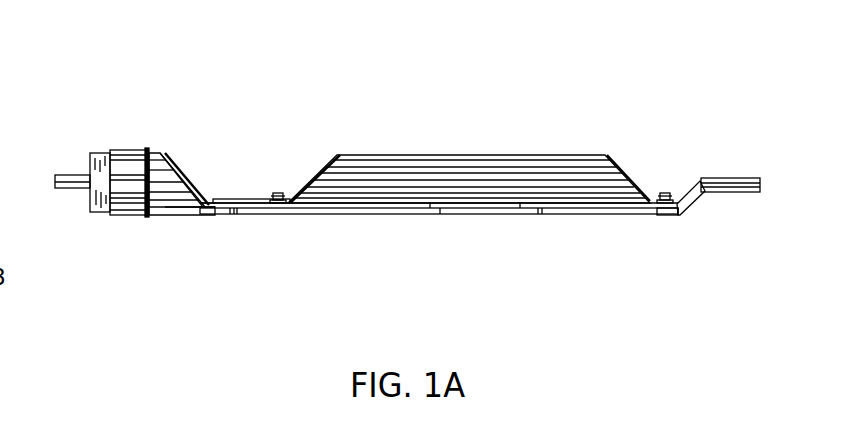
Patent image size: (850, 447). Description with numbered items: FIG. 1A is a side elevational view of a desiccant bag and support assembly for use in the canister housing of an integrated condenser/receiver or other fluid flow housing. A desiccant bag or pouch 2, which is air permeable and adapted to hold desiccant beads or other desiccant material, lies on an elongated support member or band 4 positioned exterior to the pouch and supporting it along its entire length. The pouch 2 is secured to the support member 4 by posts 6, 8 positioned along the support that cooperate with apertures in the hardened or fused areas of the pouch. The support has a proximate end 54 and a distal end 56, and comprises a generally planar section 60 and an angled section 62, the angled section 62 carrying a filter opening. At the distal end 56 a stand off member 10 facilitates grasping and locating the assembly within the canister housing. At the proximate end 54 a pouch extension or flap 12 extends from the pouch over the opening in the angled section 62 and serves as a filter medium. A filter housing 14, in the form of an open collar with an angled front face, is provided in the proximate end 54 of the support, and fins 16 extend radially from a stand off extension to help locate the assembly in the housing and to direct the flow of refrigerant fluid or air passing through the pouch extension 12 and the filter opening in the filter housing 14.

The desiccant bag or pouch 2 is at (452, 155).
The support member or band 4 is at (318, 211).
The post 6 is at (278, 193).
The post 8 is at (72, 175).
The stand off member 10 is at (752, 178).
The pouch extension or flap 12 is at (177, 172).
The filter housing 14 is at (172, 188).
The fins 16 is at (97, 155).
The proximate end of the support 54 is at (130, 210).
The distal end of the support 56 is at (688, 208).
The planar section 60 is at (462, 210).
The angled section 62 is at (187, 208).